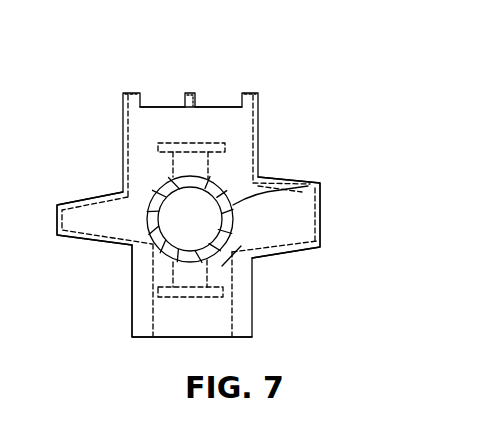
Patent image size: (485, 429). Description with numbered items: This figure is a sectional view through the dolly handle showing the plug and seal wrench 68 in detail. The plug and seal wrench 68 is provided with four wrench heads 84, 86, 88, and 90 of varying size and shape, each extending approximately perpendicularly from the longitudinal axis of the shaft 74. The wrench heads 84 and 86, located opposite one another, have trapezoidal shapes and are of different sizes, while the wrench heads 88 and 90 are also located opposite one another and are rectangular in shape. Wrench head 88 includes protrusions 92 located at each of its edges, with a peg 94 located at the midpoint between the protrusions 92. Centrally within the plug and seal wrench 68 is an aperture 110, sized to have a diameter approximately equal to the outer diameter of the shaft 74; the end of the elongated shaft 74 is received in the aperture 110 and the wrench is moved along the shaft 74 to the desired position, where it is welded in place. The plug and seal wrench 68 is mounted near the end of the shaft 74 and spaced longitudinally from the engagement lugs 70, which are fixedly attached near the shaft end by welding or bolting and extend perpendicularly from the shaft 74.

The plug and seal wrench 68 is at (268, 103).
The engagement lug 70 is at (226, 147).
The elongated shaft 74 is at (220, 247).
The wrench head 84 is at (302, 212).
The wrench head 86 is at (87, 218).
The wrench head 88 is at (238, 122).
The wrench head 90 is at (145, 330).
The protrusion 92 is at (135, 93).
The peg 94 is at (193, 93).
The aperture 110 is at (307, 186).